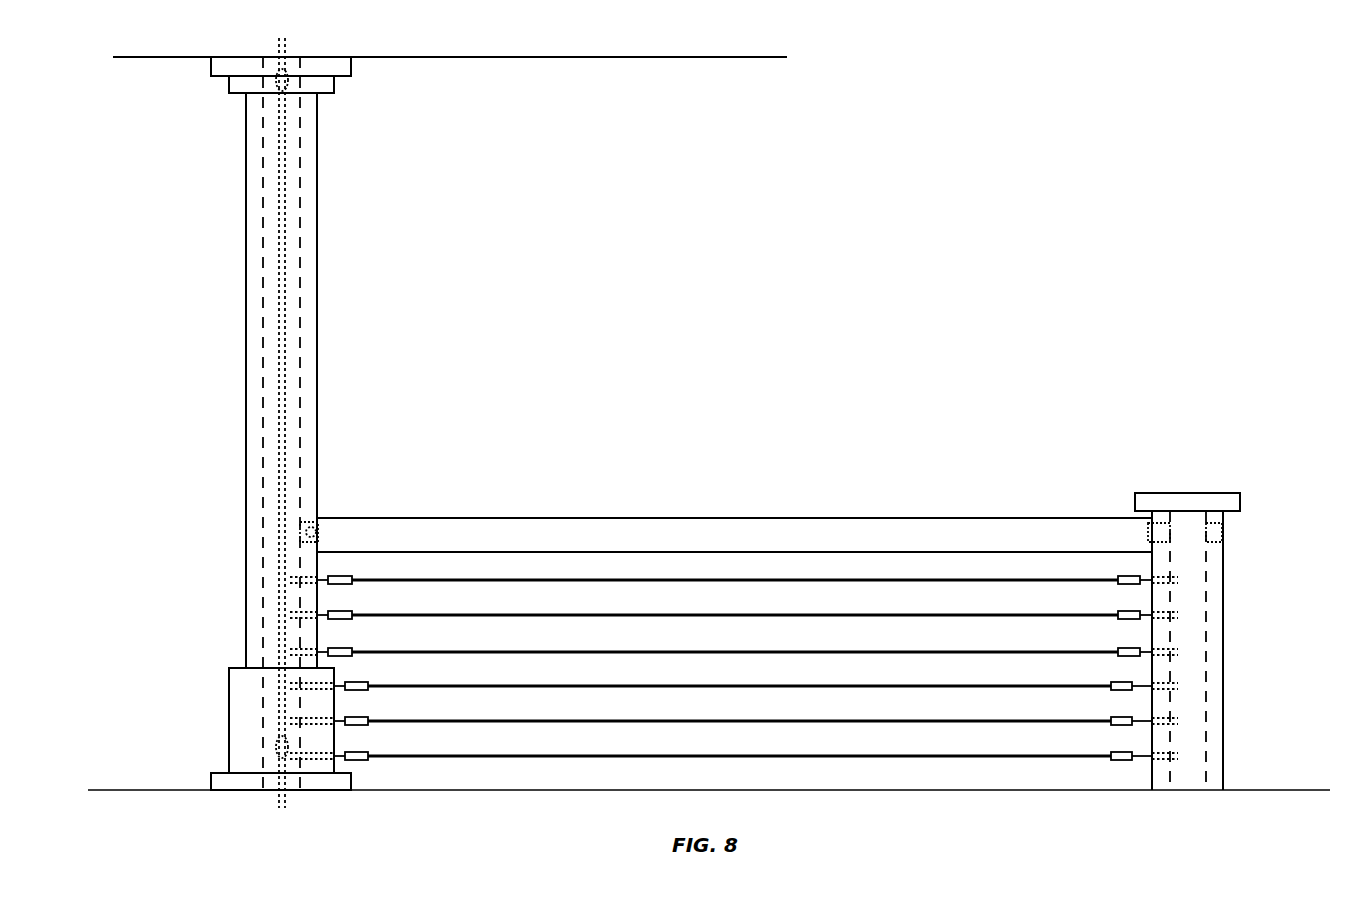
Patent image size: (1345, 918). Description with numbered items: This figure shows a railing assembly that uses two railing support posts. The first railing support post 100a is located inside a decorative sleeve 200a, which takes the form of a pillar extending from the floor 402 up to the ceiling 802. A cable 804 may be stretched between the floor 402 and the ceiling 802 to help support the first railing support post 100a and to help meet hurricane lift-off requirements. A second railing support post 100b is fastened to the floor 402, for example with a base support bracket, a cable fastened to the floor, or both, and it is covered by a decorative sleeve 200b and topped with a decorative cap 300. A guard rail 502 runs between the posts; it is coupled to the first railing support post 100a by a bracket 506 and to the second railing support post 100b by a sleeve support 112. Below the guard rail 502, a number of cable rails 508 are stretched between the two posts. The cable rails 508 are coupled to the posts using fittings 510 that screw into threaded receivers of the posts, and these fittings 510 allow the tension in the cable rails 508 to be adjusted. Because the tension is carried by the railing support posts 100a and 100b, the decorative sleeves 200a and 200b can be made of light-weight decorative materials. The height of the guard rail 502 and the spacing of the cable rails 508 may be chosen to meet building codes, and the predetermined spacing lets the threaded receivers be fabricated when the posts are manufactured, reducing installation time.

The first railing support post 100a is at (263, 262).
The decorative sleeve 200a is at (317, 318).
The cable 804 is at (283, 147).
The ceiling 802 is at (578, 57).
The floor 402 is at (142, 790).
The second railing support post 100b is at (1207, 600).
The decorative sleeve 200b is at (1223, 690).
The decorative cap 300 is at (1187, 493).
The sleeve support 112 is at (1150, 525).
The bracket 506 is at (312, 525).
The guard rail 502 is at (988, 540).
The cable rails 508 is at (1050, 826).
The fittings 510 is at (352, 760).